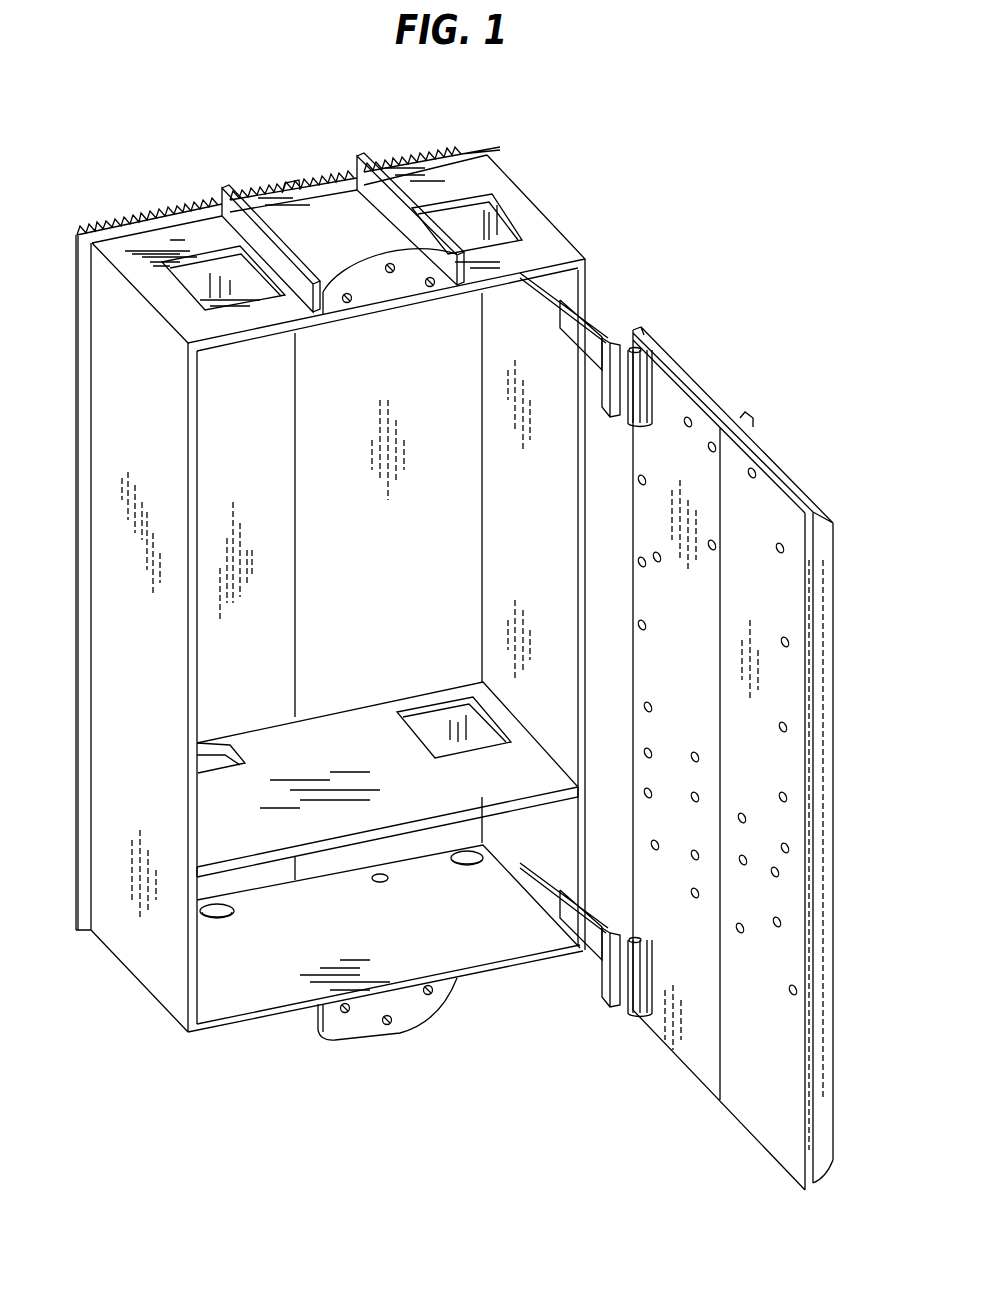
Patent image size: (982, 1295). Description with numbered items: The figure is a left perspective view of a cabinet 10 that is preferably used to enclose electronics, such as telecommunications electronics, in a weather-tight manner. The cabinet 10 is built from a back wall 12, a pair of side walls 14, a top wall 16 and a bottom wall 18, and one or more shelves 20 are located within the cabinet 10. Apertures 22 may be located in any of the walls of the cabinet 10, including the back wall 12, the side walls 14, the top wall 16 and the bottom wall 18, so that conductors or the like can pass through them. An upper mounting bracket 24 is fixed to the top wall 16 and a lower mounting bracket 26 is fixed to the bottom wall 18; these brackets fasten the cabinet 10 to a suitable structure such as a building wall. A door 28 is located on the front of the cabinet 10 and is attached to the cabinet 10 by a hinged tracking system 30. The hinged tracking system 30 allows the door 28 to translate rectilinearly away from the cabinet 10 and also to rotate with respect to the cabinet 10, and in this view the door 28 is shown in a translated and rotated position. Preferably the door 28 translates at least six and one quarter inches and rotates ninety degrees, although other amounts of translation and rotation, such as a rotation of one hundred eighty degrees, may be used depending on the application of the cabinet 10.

The cabinet 10 is at (393, 134).
The back wall 12 is at (117, 226).
The side walls 14 is at (557, 578).
The top wall 16 is at (487, 178).
The bottom wall 18 is at (233, 997).
The shelves 20 is at (553, 780).
The apertures 22 is at (467, 232).
The upper mounting bracket 24 is at (367, 280).
The lower mounting bracket 26 is at (413, 1013).
The door 28 is at (771, 460).
The hinged tracking system 30 is at (607, 296).